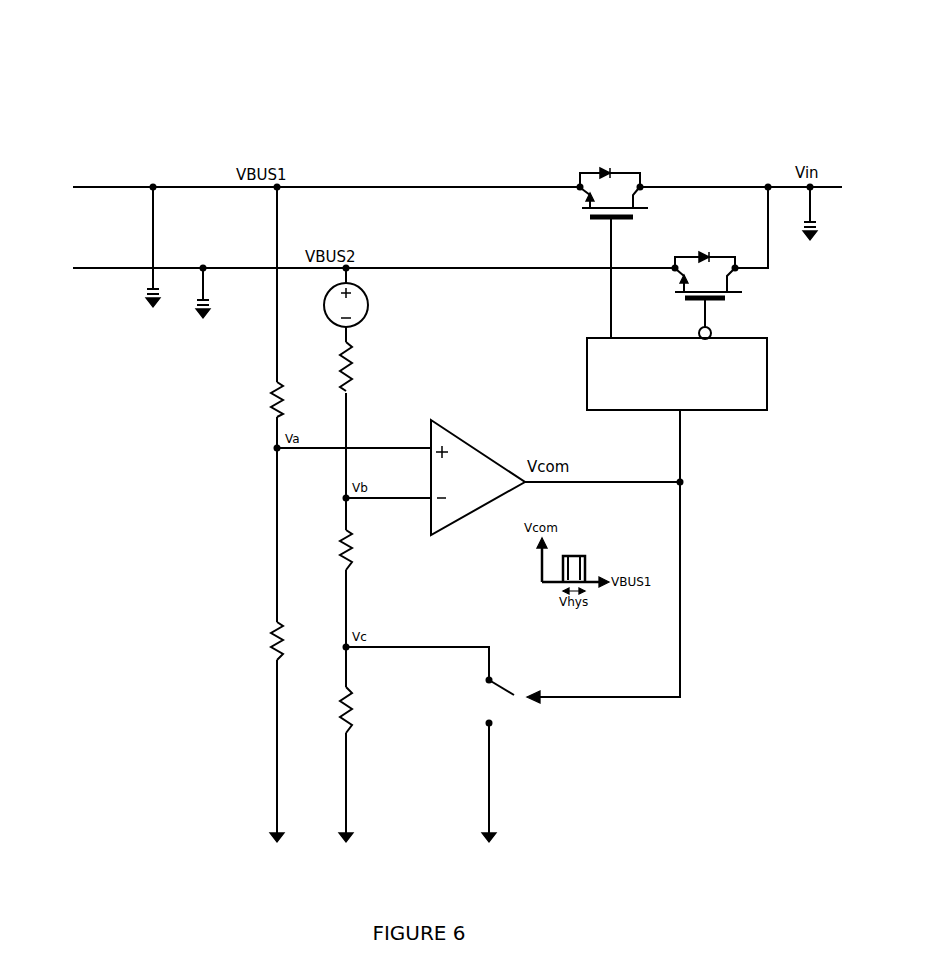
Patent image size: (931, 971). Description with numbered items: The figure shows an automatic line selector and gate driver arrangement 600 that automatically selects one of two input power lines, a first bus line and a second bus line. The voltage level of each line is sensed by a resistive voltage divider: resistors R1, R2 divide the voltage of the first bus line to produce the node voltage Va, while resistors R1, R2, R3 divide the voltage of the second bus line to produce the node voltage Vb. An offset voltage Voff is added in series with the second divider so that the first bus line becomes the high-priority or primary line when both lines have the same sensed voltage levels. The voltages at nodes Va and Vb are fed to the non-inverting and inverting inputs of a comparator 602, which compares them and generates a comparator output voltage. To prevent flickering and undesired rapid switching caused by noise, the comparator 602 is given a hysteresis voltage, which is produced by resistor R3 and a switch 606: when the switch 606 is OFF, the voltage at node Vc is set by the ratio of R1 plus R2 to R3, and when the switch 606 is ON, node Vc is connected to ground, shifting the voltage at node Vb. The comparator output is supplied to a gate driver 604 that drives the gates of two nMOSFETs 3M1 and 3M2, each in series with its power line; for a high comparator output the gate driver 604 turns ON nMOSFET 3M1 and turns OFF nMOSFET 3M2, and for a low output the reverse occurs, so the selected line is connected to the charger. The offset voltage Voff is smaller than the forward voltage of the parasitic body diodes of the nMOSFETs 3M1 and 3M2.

The arrangement 600 is at (402, 90).
The comparator 602 is at (469, 431).
The gate driver 604 is at (677, 374).
The switch 606 is at (510, 688).
The nMOSFET 3M1 is at (594, 245).
The nMOSFET 3M2 is at (725, 288).
The resistor R1 is at (324, 379).
The resistor R2 is at (324, 595).
The resistor R3 is at (359, 710).
The offset voltage Voff is at (368, 305).